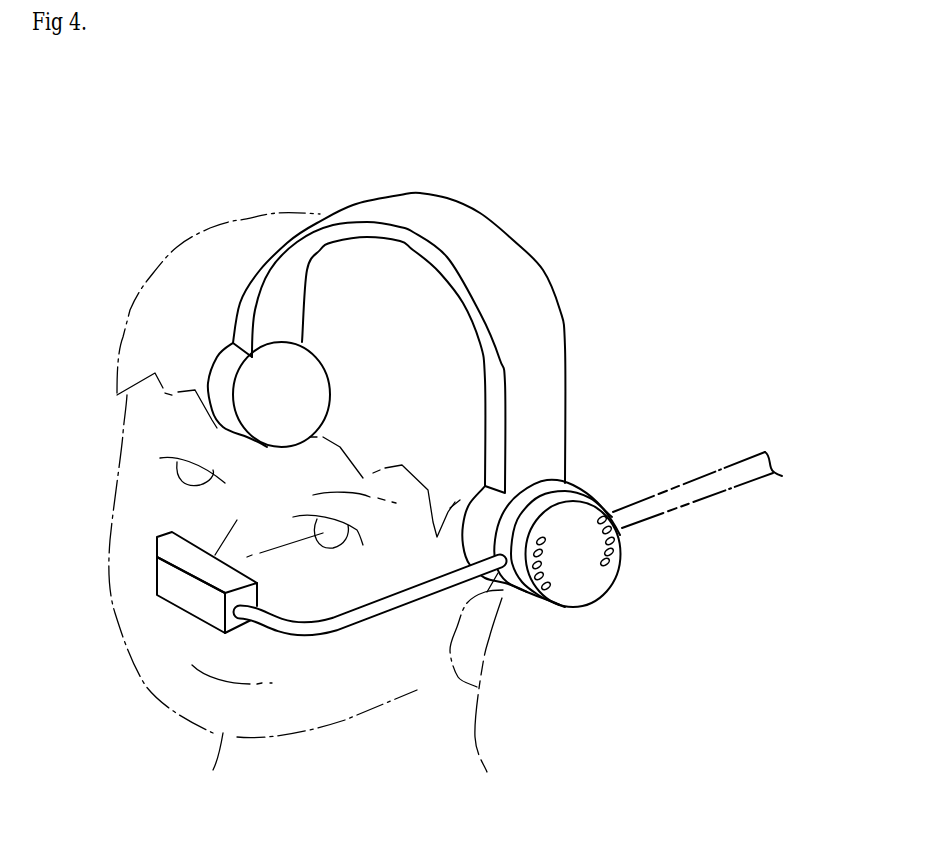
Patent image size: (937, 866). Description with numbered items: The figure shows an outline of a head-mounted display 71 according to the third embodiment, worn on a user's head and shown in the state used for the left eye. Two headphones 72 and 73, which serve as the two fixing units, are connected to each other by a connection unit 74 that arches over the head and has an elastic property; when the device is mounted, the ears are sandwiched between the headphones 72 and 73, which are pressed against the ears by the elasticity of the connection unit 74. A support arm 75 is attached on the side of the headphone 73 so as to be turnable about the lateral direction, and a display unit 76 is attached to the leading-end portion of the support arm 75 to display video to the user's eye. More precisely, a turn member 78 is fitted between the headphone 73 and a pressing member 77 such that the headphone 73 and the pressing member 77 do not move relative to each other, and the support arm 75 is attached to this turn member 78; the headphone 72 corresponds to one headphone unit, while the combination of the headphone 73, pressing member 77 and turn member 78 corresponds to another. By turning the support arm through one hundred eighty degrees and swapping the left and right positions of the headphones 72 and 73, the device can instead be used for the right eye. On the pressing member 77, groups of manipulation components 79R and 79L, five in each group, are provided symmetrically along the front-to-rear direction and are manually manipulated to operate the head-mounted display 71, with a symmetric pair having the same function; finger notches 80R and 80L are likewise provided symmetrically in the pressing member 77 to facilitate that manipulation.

The head-mounted display 71 is at (473, 441).
The headphone 72 is at (297, 385).
The headphone 73 is at (483, 508).
The connection unit 74 is at (557, 365).
The support arm 75 is at (417, 598).
The display unit 76 is at (190, 607).
The pressing member 77 is at (590, 600).
The turn member 78 is at (567, 485).
The group of manipulation components 79L is at (555, 585).
The group of manipulation components 79R is at (612, 555).
The finger notch 80L is at (523, 587).
The finger notch 80R is at (608, 577).